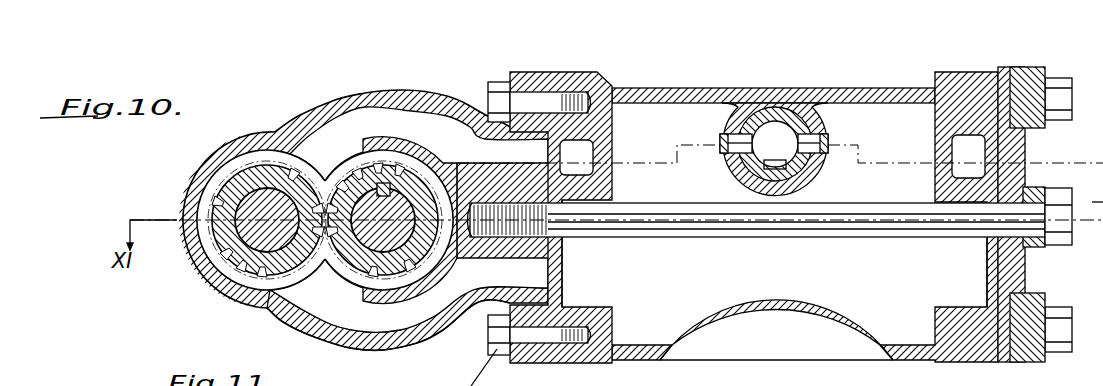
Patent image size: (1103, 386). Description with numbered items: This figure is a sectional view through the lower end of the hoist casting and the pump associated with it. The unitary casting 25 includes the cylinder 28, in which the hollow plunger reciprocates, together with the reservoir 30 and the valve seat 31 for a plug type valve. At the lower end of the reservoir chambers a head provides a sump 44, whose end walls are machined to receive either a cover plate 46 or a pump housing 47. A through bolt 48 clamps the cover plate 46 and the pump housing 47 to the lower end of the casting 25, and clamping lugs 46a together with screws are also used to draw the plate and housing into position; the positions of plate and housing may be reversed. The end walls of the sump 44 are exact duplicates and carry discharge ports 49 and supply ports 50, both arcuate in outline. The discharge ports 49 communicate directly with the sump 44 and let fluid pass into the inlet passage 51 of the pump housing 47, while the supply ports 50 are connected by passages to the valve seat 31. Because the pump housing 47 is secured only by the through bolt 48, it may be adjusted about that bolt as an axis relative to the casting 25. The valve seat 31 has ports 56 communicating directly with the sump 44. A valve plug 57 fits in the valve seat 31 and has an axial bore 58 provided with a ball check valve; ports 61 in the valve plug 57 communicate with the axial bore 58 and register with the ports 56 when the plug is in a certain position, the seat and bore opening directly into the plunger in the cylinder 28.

The unitary casting 25 is at (642, 93).
The cylinder 28 is at (776, 343).
The reservoir 30 is at (541, 229).
The valve seat 31 is at (806, 168).
The sump 44 is at (902, 334).
The cover plate 46 is at (1017, 140).
The clamping lugs 46a is at (1040, 72).
The pump housing 47 is at (388, 348).
The through bolt 48 is at (657, 205).
The discharge ports 49 is at (556, 272).
The supply ports 50 is at (562, 158).
The inlet passage 51 is at (446, 303).
The ports 56 is at (721, 137).
The valve plug 57 is at (773, 99).
The axial bore 58 is at (827, 112).
The ports 61 is at (742, 152).